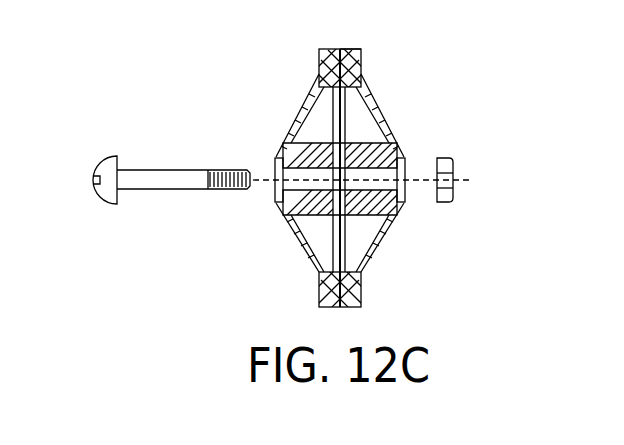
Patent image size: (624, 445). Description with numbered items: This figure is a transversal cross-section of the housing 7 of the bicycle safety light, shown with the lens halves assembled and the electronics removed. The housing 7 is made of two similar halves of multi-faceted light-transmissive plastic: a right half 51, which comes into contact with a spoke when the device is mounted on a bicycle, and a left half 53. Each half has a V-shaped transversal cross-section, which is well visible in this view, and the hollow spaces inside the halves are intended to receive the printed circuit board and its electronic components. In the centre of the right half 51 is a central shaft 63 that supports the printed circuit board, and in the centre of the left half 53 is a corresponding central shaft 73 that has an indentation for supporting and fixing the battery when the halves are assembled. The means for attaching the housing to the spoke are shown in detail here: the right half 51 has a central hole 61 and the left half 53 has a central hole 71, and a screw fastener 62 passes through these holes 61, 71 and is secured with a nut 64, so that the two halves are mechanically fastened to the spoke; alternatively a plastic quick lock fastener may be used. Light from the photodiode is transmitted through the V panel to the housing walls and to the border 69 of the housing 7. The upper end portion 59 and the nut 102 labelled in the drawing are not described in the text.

The housing 7 is at (430, 92).
The right half 51 is at (316, 237).
The left half 53 is at (362, 237).
The upper end cap 59 is at (321, 68).
The central hole 61 is at (280, 197).
The screw fastener 62 is at (177, 170).
The central shaft 63 is at (279, 155).
The nut 64 is at (337, 143).
The border 69 is at (362, 68).
The central hole 71 is at (390, 182).
The central shaft 73 is at (400, 151).
The nut 102 is at (457, 180).